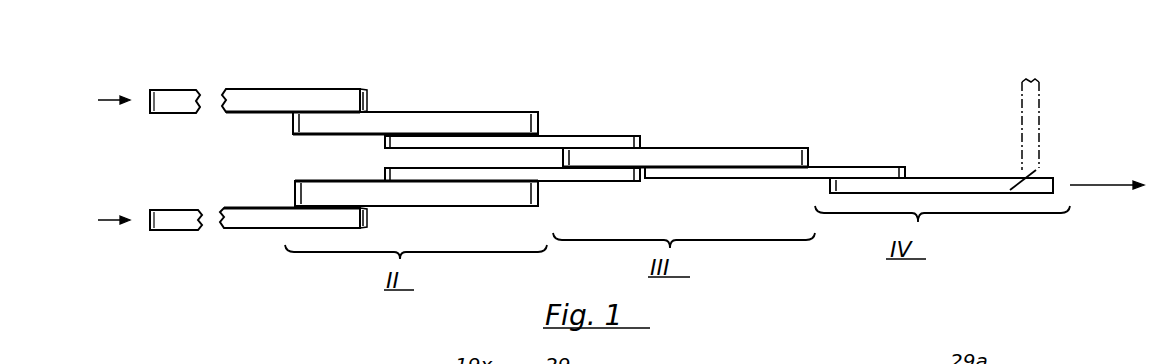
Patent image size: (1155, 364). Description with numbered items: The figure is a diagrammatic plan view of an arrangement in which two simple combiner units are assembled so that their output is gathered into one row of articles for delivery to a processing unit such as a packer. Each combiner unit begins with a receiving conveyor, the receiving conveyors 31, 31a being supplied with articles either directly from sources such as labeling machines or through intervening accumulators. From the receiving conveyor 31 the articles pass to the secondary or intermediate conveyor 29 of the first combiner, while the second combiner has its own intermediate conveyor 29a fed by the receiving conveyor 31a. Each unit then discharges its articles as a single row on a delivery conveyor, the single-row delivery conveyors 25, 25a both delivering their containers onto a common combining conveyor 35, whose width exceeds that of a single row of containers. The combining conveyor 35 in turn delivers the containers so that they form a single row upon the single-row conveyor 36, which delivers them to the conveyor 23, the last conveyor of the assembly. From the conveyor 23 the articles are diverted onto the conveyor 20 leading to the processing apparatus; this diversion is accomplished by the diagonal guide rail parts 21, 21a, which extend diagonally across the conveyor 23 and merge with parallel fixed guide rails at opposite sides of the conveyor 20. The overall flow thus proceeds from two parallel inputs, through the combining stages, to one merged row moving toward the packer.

The conveyor 20 is at (1031, 108).
The diagonal guide rail part 21 is at (1043, 170).
The diagonal guide rail part 21a is at (1018, 168).
The conveyor 23 is at (932, 184).
The single-row delivery conveyor 25 is at (580, 141).
The single-row delivery conveyor 25a is at (608, 172).
The secondary or intermediate conveyor 29 is at (437, 118).
The intermediate conveyor 29a is at (475, 197).
The receiving conveyor 31 is at (287, 96).
The receiving conveyor 31a is at (258, 220).
The combining conveyor 35 is at (799, 143).
The single-row conveyor 36 is at (845, 168).